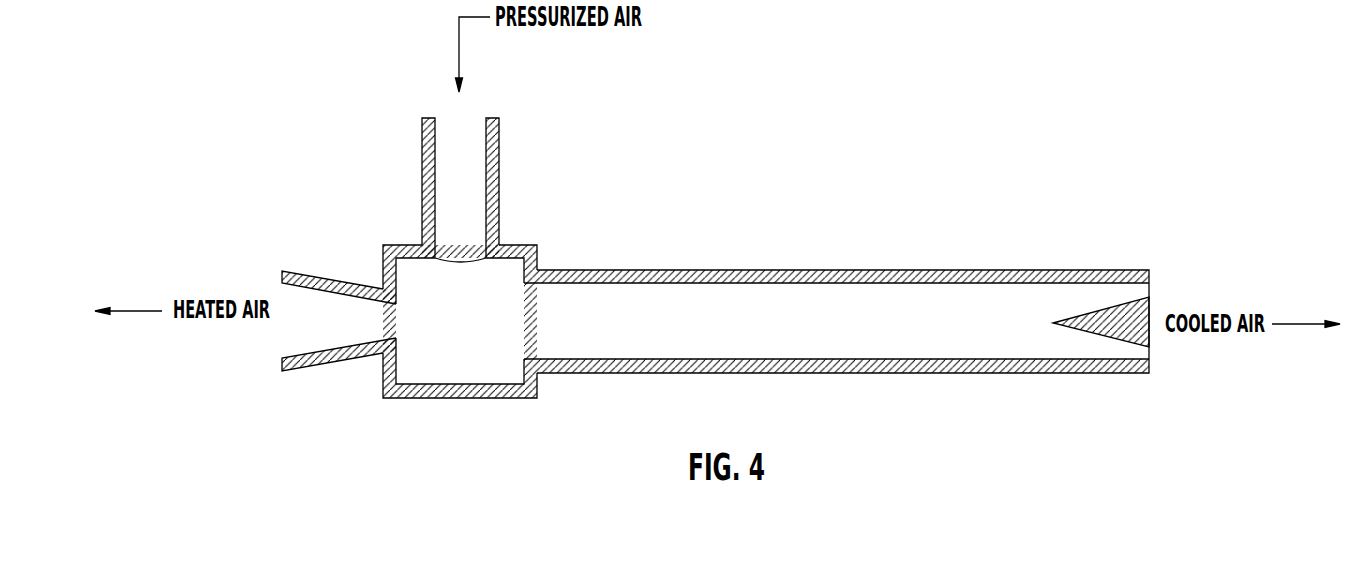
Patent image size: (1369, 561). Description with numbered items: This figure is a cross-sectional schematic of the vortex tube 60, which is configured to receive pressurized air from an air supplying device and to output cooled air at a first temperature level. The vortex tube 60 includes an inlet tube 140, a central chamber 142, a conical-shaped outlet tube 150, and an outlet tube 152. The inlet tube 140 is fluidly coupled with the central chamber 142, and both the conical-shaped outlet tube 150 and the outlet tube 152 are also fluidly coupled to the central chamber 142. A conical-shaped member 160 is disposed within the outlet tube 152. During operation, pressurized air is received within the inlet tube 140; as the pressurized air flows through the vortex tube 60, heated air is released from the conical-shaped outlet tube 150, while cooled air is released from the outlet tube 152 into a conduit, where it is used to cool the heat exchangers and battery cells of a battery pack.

The vortex tube 60 is at (745, 258).
The inlet tube 140 is at (500, 165).
The central chamber 142 is at (525, 247).
The conical-shaped outlet tube 150 is at (312, 279).
The outlet tube 152 is at (958, 279).
The conical-shaped member 160 is at (1140, 323).